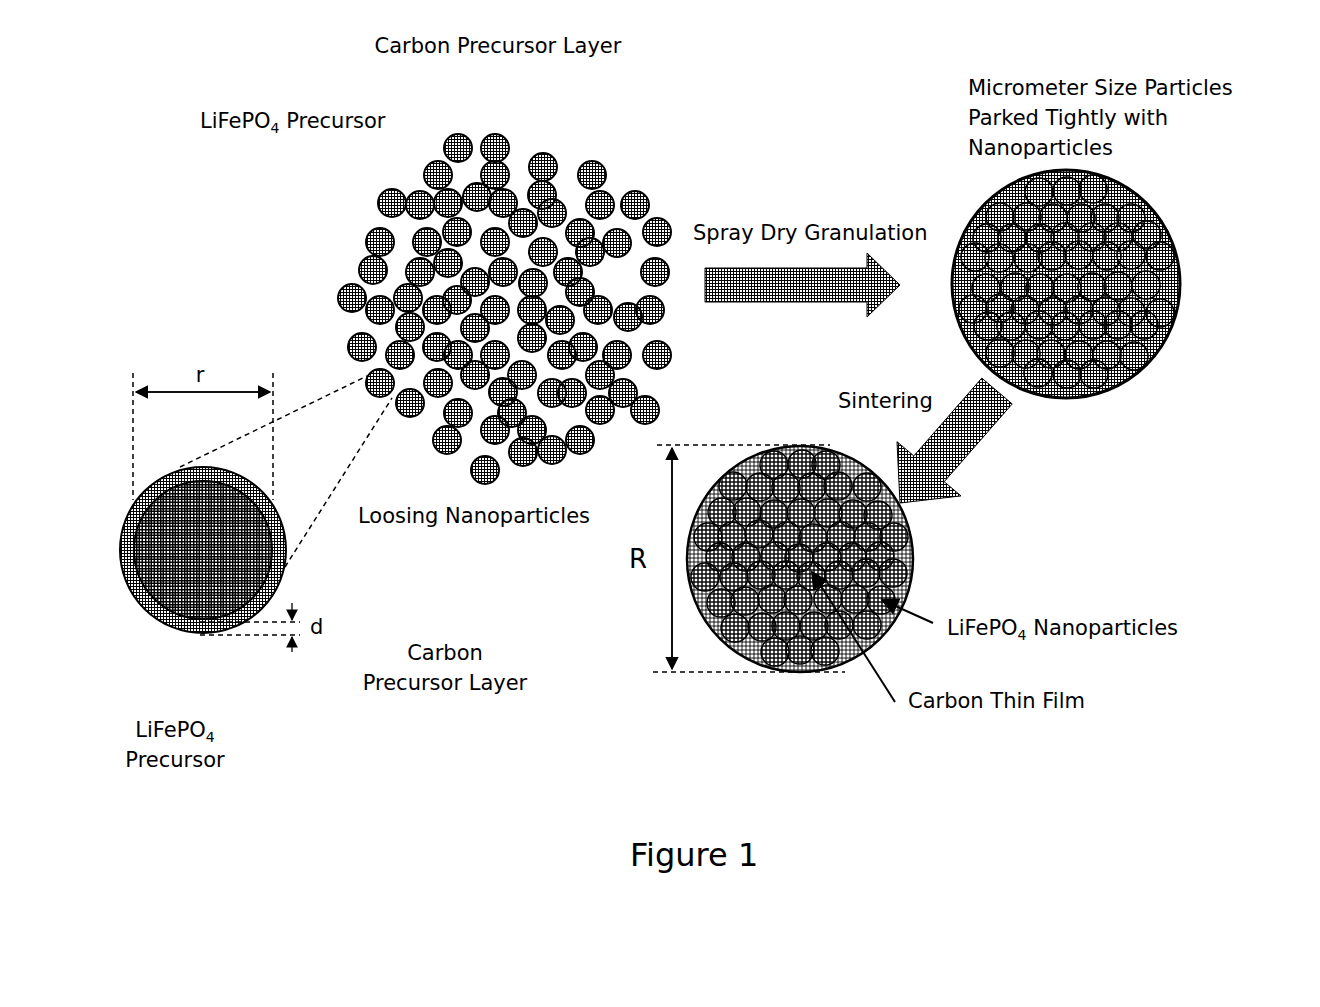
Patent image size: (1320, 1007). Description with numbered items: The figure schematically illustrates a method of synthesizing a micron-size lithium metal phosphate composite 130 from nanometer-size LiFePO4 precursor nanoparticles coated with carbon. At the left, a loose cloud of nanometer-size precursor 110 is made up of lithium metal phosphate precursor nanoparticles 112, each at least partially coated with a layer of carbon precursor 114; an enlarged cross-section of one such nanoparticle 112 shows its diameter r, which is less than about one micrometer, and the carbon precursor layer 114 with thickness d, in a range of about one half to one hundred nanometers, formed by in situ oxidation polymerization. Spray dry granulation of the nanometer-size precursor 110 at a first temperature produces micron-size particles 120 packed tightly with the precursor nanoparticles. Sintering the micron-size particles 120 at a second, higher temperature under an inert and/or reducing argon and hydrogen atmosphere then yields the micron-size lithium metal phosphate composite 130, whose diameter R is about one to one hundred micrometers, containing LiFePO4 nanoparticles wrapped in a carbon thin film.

The nanometer-size precursor 110 is at (680, 186).
The lithium metal phosphate precursor nanoparticle 112 is at (450, 222).
The layer of carbon precursor 114 is at (498, 130).
The micron-size particles 120 is at (1212, 252).
The lithium metal phosphate composite 130 is at (986, 579).